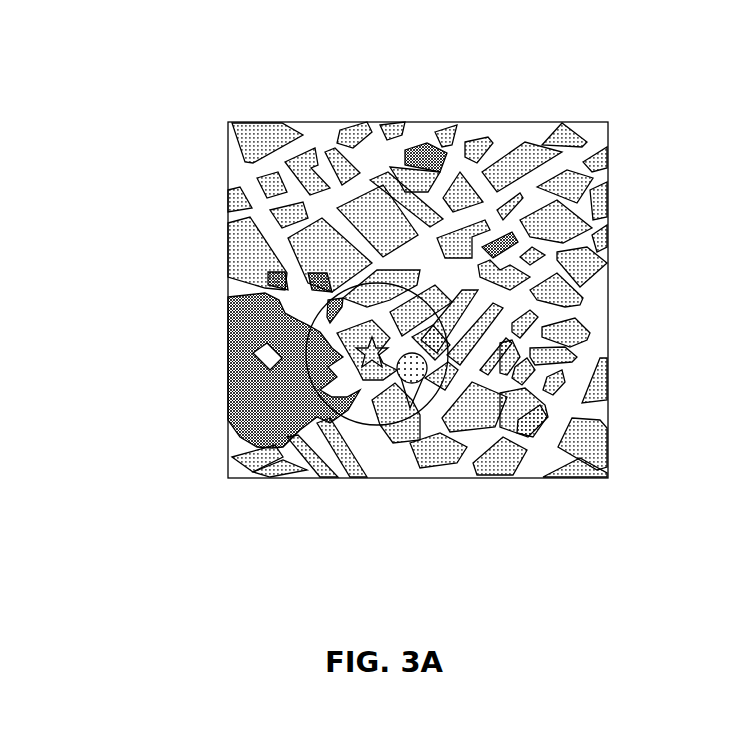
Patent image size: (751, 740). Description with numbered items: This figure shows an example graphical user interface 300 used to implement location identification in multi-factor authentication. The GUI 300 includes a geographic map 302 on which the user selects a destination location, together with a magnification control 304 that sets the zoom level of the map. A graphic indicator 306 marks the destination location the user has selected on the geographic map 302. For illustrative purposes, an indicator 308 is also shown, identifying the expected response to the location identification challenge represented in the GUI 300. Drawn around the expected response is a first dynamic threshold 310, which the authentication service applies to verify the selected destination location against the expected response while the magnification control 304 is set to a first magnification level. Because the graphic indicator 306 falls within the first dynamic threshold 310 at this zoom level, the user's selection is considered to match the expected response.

The graphical user interface 300 is at (517, 105).
The geographic map 302 is at (233, 328).
The magnification control 304 is at (473, 542).
The graphic indicator 306 is at (408, 405).
The indicator 308 is at (338, 352).
The first dynamic threshold 310 is at (446, 352).